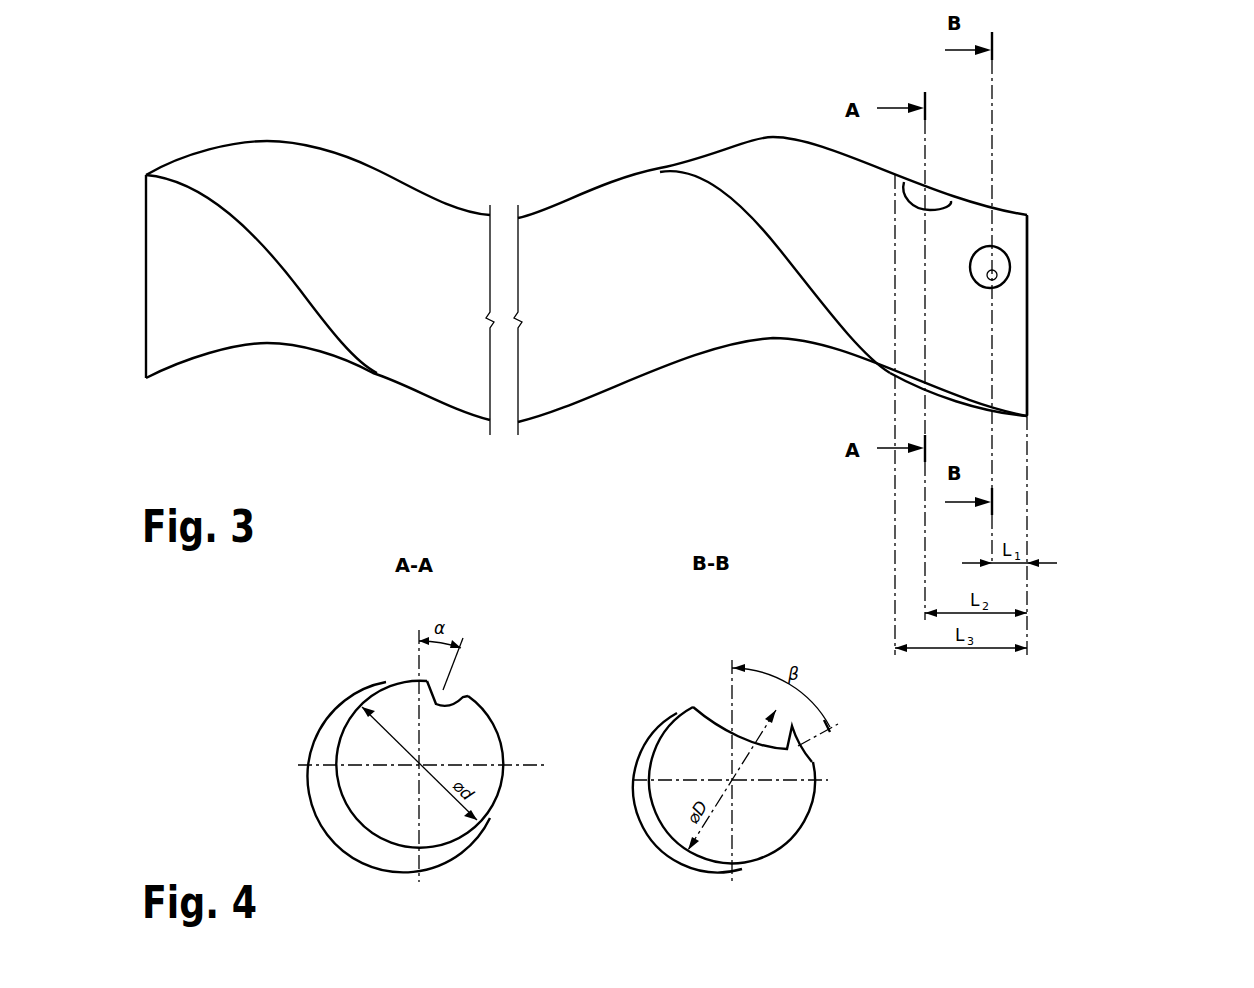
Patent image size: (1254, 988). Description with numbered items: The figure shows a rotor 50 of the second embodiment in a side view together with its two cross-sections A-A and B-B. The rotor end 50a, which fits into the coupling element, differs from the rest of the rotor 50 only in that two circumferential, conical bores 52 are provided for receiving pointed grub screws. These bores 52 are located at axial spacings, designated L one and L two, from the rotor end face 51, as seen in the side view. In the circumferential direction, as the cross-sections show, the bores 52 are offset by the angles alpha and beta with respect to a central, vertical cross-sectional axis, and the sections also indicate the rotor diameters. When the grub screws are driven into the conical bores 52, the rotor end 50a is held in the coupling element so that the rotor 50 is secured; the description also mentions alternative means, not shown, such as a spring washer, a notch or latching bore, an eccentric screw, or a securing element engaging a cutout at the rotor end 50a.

In FIG. 3, the rotor 50 is at (184, 138).
In FIG. 3, the rotor end 50a is at (1078, 296).
In FIG. 4, the rotor end 50a is at (673, 748).
In FIG. 3, the rotor end face 51 is at (1027, 350).
In FIG. 3, the conical bores 52 is at (997, 258).
In FIG. 4, the conical bores 52 is at (695, 708).